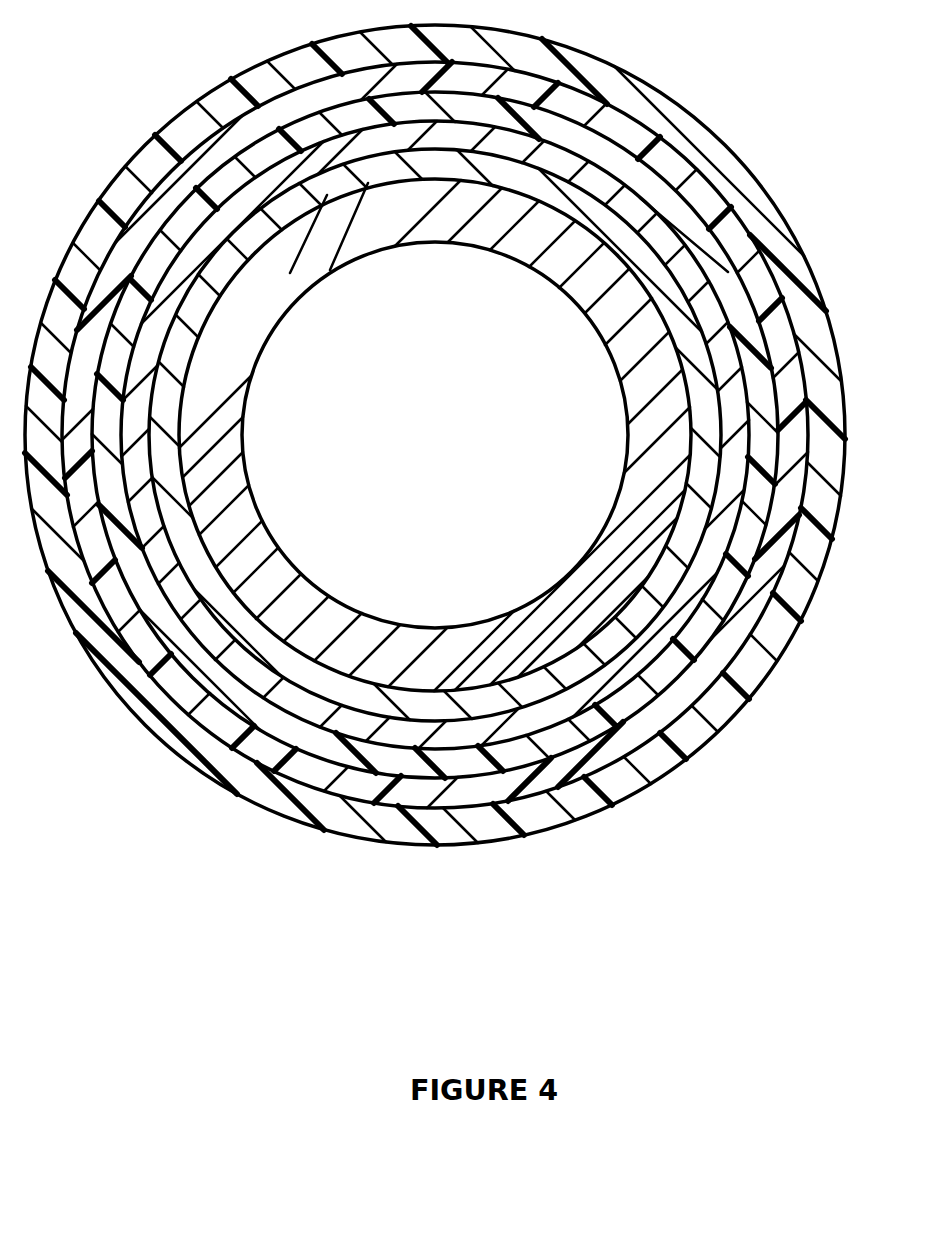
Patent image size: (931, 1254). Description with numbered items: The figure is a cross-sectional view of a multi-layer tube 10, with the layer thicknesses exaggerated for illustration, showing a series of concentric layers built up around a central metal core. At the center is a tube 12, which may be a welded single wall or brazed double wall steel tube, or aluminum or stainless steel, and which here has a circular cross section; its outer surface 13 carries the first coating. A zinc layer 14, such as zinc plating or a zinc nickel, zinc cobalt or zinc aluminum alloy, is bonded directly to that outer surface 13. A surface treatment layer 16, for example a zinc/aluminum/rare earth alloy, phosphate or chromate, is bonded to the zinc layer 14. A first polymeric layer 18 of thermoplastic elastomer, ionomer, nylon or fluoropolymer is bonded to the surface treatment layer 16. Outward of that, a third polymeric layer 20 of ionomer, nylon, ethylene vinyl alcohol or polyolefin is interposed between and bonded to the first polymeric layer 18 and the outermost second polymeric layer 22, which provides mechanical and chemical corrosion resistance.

The multi-layer tube 10 is at (140, 80).
The tube 12 is at (232, 371).
The outer surface 13 is at (680, 360).
The zinc layer 14 is at (212, 590).
The surface treatment layer 16 is at (472, 738).
The first polymeric layer 18 is at (646, 187).
The third polymeric layer 20 is at (710, 662).
The second polymeric layer 22 is at (168, 733).